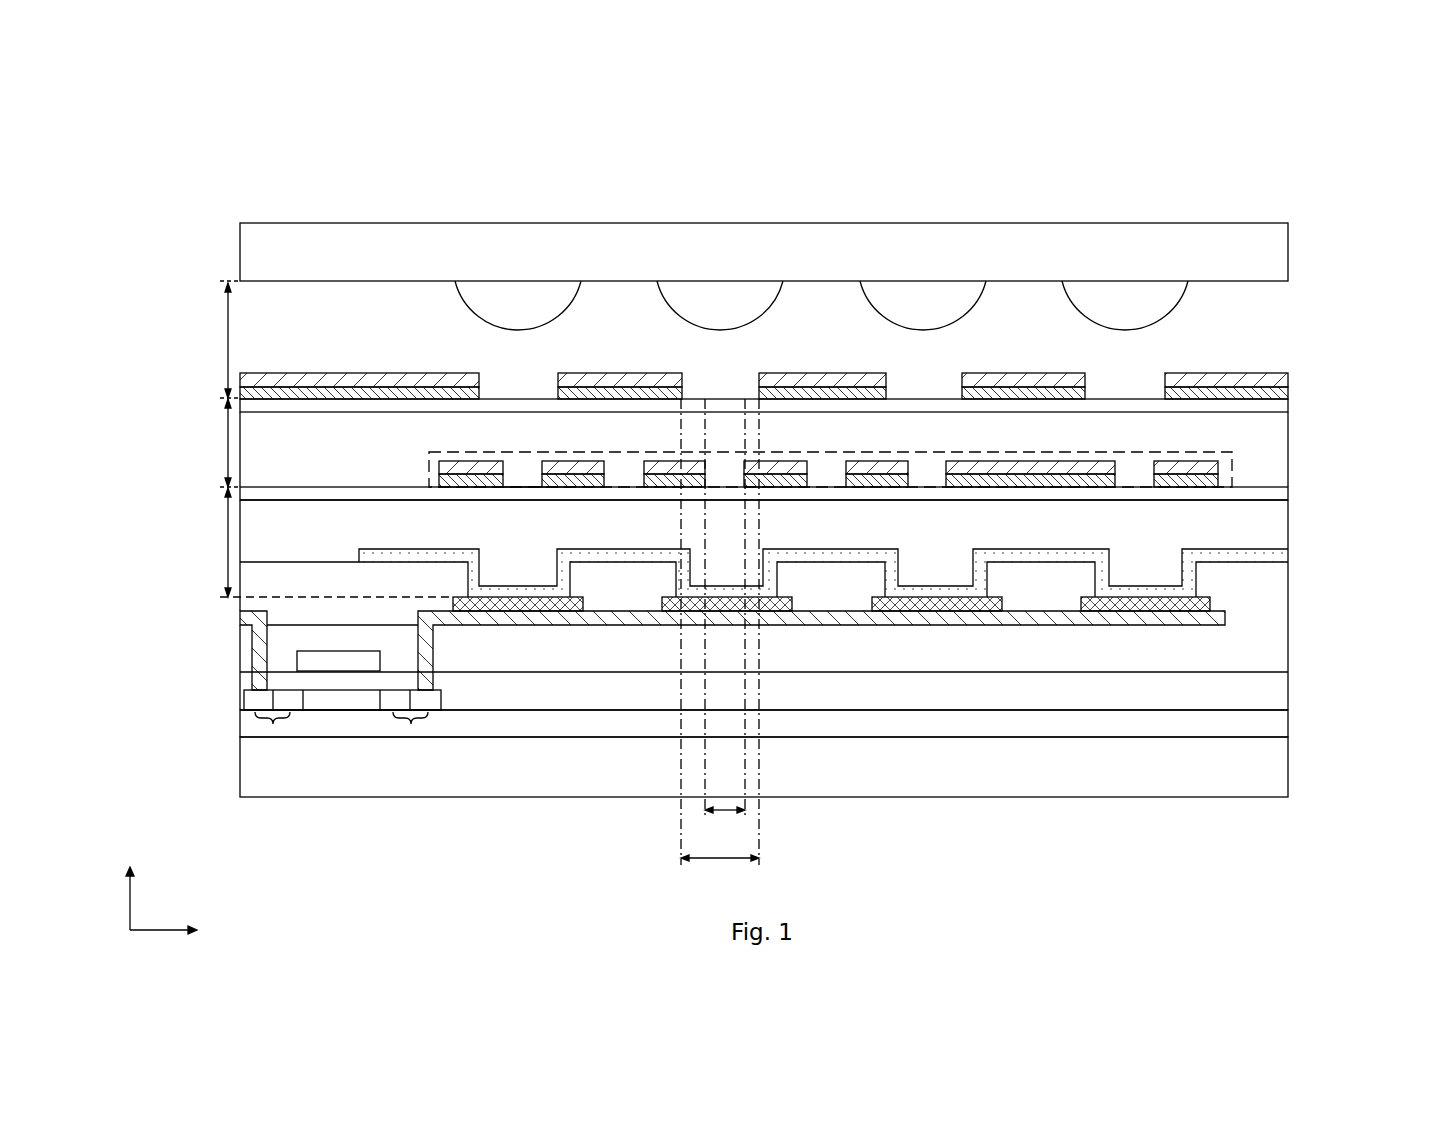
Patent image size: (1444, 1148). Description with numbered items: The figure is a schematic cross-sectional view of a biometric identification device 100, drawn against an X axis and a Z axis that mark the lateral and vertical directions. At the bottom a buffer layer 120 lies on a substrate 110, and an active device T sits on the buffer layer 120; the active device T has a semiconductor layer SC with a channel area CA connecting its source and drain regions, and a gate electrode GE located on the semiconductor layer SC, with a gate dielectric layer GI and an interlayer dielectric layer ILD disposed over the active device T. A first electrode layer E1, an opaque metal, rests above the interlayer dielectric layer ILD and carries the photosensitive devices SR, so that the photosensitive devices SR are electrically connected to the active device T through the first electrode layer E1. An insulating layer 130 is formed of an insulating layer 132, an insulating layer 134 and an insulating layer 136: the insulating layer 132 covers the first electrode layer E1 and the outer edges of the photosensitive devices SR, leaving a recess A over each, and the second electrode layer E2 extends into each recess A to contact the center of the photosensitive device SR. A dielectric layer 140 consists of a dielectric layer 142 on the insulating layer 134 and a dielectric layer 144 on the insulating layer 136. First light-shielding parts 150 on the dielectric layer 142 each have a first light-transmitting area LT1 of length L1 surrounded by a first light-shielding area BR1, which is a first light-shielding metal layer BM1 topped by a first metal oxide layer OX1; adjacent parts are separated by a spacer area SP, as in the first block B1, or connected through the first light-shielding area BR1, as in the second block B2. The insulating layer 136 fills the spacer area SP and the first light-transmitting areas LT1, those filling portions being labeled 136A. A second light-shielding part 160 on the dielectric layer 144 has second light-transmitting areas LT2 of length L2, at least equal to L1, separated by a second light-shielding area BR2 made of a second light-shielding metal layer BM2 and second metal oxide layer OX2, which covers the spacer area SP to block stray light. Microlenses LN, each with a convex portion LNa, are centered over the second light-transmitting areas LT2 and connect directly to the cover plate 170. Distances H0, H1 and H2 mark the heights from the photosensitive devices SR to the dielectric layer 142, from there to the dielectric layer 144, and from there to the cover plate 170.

The biometric identification device 100 is at (179, 168).
The substrate 110 is at (1288, 765).
The buffer layer 120 is at (1288, 724).
The insulating layer 130 is at (779, 55).
The insulating layer 132 is at (1288, 580).
The insulating layer 134 is at (1288, 527).
The insulating layer 136 is at (1288, 456).
The portions of the insulating layer filling the first light-transmitting area 136A is at (535, 467).
The dielectric layer 140 is at (973, 55).
The dielectric layer 142 is at (1288, 494).
The dielectric layer 144 is at (1288, 405).
The first light-shielding parts 150 is at (1169, 55).
The second light-shielding part 160 is at (1364, 55).
The cover plate 170 is at (1288, 253).
The active device T is at (573, 55).
The gate electrode GE is at (307, 662).
The semiconductor layer SC is at (342, 788).
The channel area CA is at (338, 705).
The gate dielectric layer GI is at (1288, 692).
The interlayer dielectric layer ILD is at (1288, 650).
The first electrode layer E1 is at (1225, 620).
The second electrode layer E2 is at (1288, 555).
The photosensitive devices SR is at (1210, 606).
The first light-transmitting area LT1 is at (516, 470).
The first light-shielding area BR1 is at (651, 455).
The first metal oxide layer OX1 is at (429, 466).
The first light-shielding metal layer BM1 is at (429, 480).
The second light-transmitting areas LT2 is at (1130, 387).
The second light-shielding area BR2 is at (839, 373).
The second metal oxide layer OX2 is at (1288, 377).
The second light-shielding metal layer BM2 is at (806, 390).
The spacer area SP is at (622, 470).
The first block B1 is at (725, 450).
The second block B2 is at (923, 450).
The microlenses LN is at (482, 297).
The convex portion of the microlens LNa is at (1123, 330).
The recess A is at (518, 560).
The distance H0 is at (321, 542).
The distance H1 is at (226, 425).
The distance H2 is at (213, 339).
The length of the first light-transmitting area L1 is at (725, 621).
The length of the second light-transmitting area L2 is at (720, 644).
The X-axis direction X is at (175, 930).
The Z direction Z is at (130, 881).